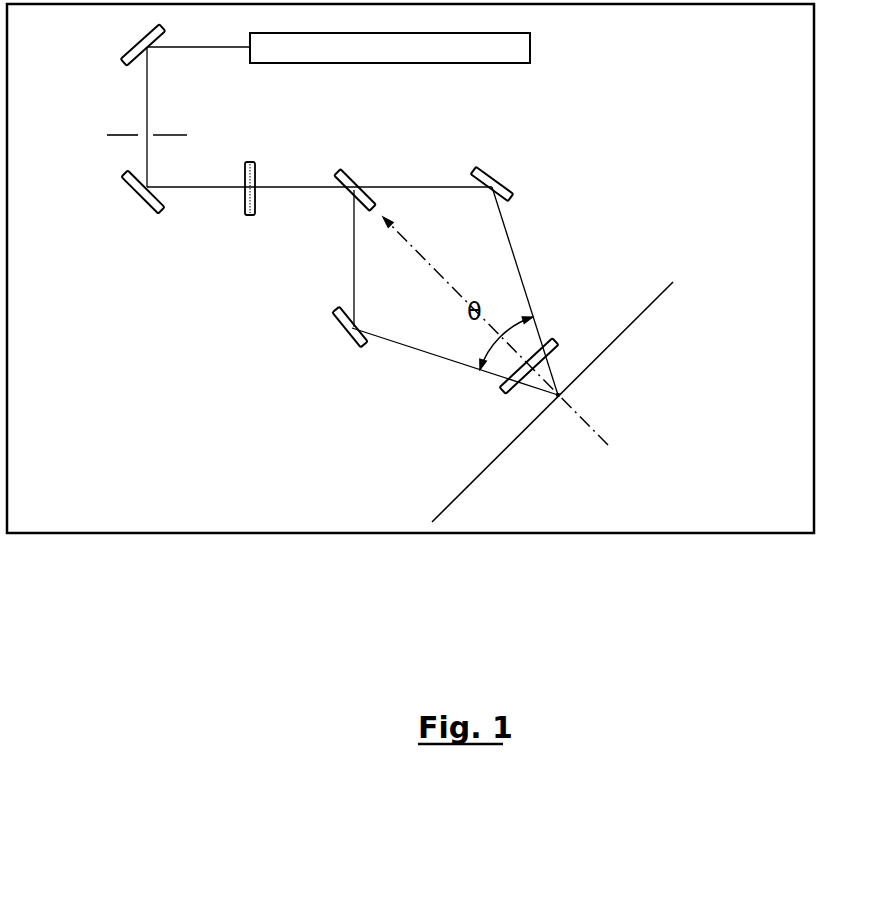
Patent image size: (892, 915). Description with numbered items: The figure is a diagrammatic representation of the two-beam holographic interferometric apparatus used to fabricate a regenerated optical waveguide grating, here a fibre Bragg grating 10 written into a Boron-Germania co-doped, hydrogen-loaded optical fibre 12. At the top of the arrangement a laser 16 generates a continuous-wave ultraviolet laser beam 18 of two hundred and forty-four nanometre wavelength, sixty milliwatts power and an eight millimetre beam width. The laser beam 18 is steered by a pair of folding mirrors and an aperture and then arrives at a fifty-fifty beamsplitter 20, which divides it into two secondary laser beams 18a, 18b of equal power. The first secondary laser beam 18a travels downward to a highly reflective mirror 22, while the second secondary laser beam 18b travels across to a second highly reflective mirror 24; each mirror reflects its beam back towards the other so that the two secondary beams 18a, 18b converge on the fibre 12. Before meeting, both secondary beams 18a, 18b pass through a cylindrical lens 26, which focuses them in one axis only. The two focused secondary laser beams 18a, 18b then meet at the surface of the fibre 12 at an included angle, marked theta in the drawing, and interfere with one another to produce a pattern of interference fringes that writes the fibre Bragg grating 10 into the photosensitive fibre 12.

The fibre Bragg grating 10 is at (578, 399).
The optical fibre 12 is at (662, 313).
The laser 16 is at (543, 46).
The laser beam 18 is at (132, 99).
The first secondary laser beam 18a is at (340, 263).
The second secondary laser beam 18b is at (448, 175).
The beamsplitter 20 is at (374, 163).
The mirror 22 is at (338, 342).
The mirror 24 is at (525, 181).
The cylindrical lens 26 is at (487, 400).